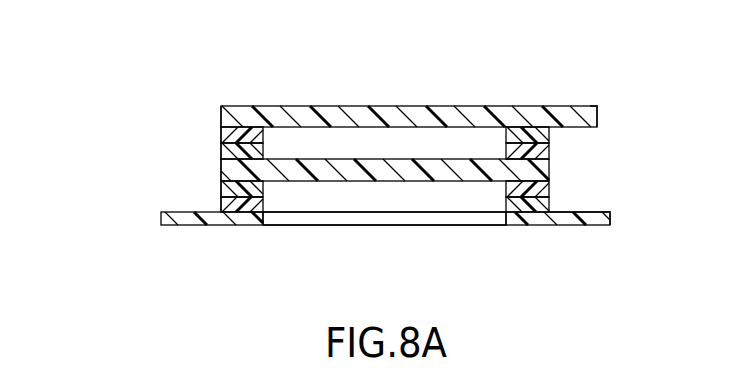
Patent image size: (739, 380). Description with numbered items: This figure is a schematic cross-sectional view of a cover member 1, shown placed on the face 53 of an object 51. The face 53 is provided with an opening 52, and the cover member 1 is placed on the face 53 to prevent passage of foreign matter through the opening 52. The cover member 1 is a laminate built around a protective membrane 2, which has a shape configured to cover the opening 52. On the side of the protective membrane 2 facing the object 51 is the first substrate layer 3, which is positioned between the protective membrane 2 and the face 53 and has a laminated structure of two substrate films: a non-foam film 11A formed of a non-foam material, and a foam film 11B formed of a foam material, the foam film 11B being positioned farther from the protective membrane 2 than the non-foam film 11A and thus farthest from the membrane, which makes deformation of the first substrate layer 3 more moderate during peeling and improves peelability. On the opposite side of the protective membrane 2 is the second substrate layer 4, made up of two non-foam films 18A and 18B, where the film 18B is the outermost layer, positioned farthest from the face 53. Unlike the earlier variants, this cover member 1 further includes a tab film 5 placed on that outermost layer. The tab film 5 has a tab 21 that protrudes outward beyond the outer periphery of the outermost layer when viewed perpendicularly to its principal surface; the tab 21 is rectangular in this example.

The cover member 1 is at (600, 106).
The protective membrane 2 is at (537, 168).
The first substrate layer 3 is at (83, 160).
The second substrate layer 4 is at (83, 105).
The tab film 5 is at (412, 117).
The non-foam film 11A is at (222, 185).
The foam film 11B is at (222, 206).
The non-foam film 18A is at (222, 155).
The non-foam film 18B is at (222, 130).
The tab 21 is at (590, 108).
The object 51 is at (600, 213).
The opening 52 is at (388, 216).
The face 53 is at (603, 209).